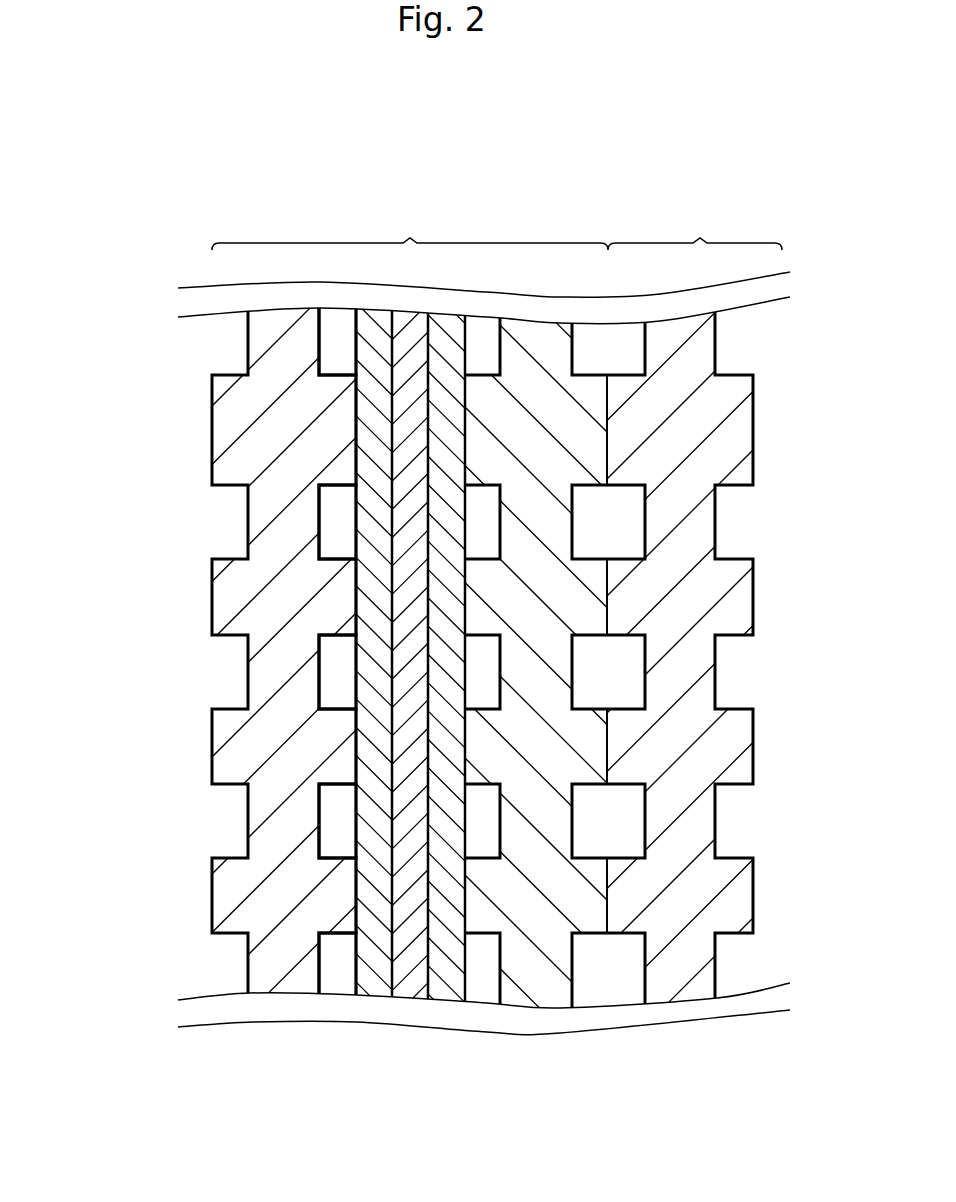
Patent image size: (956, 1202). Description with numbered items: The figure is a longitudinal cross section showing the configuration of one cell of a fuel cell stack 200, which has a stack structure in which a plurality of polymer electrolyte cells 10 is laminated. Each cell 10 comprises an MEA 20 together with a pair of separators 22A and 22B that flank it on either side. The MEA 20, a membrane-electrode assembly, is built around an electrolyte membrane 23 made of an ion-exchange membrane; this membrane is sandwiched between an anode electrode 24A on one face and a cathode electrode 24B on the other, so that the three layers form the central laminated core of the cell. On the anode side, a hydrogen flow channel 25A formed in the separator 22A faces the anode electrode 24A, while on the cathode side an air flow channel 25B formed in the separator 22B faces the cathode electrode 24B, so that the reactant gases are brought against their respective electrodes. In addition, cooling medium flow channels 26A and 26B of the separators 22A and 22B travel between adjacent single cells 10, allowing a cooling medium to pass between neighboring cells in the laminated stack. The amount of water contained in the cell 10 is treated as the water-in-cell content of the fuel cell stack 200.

The fuel cell stack 200 is at (150, 178).
The polymer electrolyte cell 10 is at (497, 230).
The MEA 20 is at (416, 695).
The separator 22A is at (295, 983).
The separator 22B is at (540, 985).
The electrolyte membrane 23 is at (410, 985).
The anode electrode 24A is at (373, 985).
The cathode electrode 24B is at (465, 679).
The hydrogen flow channel 25A is at (342, 512).
The air flow channel 25B is at (487, 522).
The cooling medium flow channel 26A is at (642, 683).
The cooling medium flow channel 26B is at (572, 687).